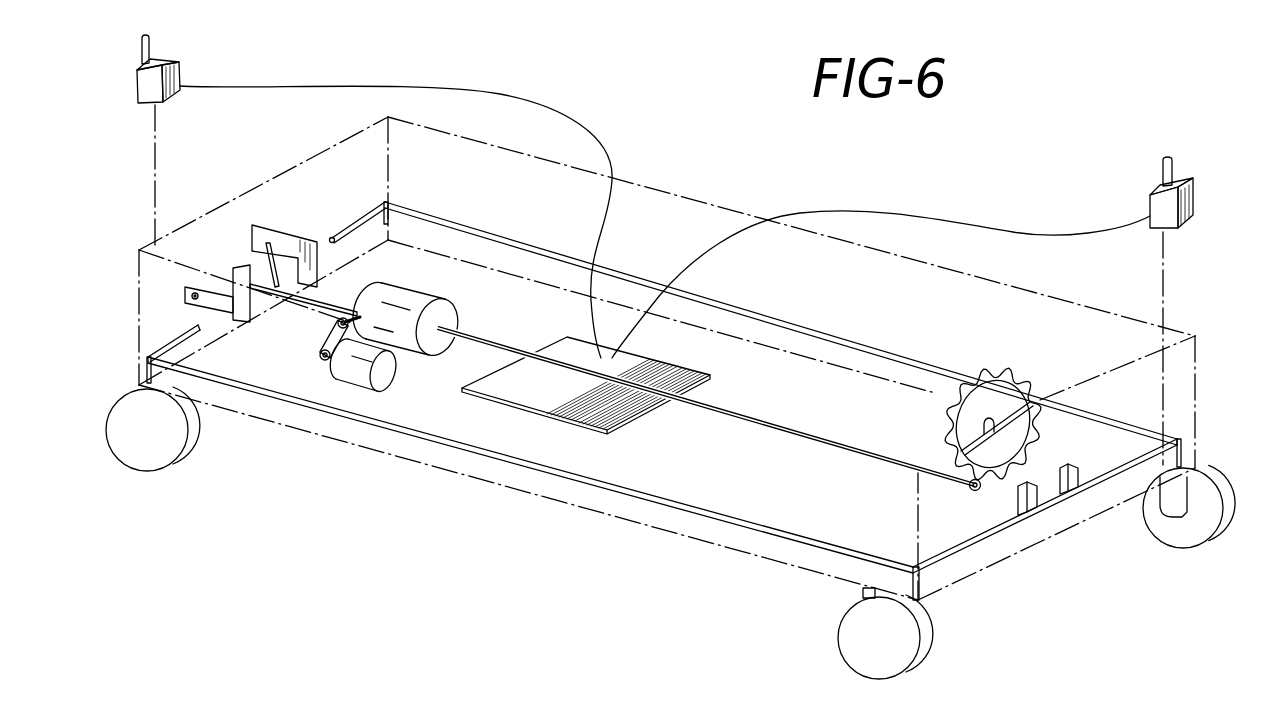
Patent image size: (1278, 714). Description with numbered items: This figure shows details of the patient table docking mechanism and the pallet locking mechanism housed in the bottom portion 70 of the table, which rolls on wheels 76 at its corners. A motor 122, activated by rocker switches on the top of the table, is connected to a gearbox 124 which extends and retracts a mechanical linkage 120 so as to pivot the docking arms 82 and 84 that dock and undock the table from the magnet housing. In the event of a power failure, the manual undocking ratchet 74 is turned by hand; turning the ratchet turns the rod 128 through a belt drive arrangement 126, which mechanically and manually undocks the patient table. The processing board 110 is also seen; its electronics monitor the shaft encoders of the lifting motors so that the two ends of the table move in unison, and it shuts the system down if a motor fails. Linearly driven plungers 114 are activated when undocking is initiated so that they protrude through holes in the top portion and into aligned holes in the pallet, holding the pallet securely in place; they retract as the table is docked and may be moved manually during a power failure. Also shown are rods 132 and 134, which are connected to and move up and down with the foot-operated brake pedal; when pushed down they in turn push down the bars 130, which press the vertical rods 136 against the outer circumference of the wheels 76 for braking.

The bottom portion 70 is at (1205, 413).
The manual undocking ratchet 74 is at (942, 428).
The wheels 76 is at (182, 472).
The docking arm 82 is at (184, 299).
The docking arm 84 is at (308, 236).
The processing board 110 is at (615, 413).
The linearly driven plungers 114 is at (150, 93).
The mechanical linkage 120 is at (314, 294).
The motor 122 is at (397, 392).
The gearbox 124 is at (446, 312).
The belt drive arrangement 126 is at (968, 493).
The rod 128 is at (767, 423).
The bars 130 is at (848, 338).
The rod 132 is at (1076, 468).
The rod 134 is at (1029, 503).
The vertical rods 136 is at (147, 369).